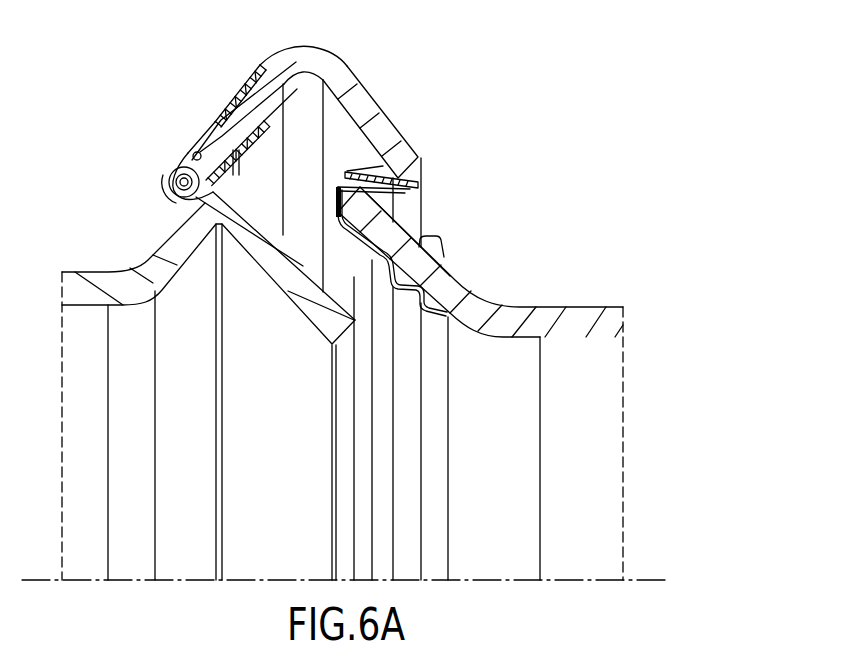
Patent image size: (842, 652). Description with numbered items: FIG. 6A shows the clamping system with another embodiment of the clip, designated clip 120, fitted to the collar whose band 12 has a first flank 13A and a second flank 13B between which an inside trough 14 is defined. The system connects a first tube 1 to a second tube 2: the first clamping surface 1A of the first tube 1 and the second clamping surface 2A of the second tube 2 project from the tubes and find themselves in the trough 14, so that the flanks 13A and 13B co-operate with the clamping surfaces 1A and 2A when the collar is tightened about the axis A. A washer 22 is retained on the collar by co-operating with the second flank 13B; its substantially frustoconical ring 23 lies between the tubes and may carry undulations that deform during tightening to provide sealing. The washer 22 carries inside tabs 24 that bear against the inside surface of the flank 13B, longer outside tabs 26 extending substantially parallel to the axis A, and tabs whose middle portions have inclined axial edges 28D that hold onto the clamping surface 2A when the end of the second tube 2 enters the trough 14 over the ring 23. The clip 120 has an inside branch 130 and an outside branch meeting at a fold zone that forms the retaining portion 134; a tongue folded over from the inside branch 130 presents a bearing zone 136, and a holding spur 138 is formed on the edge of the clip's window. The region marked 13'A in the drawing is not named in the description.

The first tube 1 is at (72, 263).
The first clamping surface 1A is at (180, 240).
The second tube 2 is at (558, 290).
The second clamping surface 2A is at (423, 258).
The band 12 is at (292, 45).
The first flank 13A is at (247, 108).
The second flank 13B is at (365, 108).
The hinge portion 13'A is at (147, 191).
The inside trough 14 is at (312, 75).
The washer 22 is at (324, 196).
The frustoconical ring 23 is at (382, 263).
The inside tabs 24 is at (378, 171).
The outside tabs of a first type 26 is at (438, 242).
The inclined axial edges 28D is at (388, 186).
The clip 120 is at (207, 108).
The inside branch 130 is at (236, 187).
The retaining portion 134 is at (167, 204).
The bearing zone 136 is at (192, 157).
The holding spur 138 is at (215, 122).
The axis A is at (650, 578).